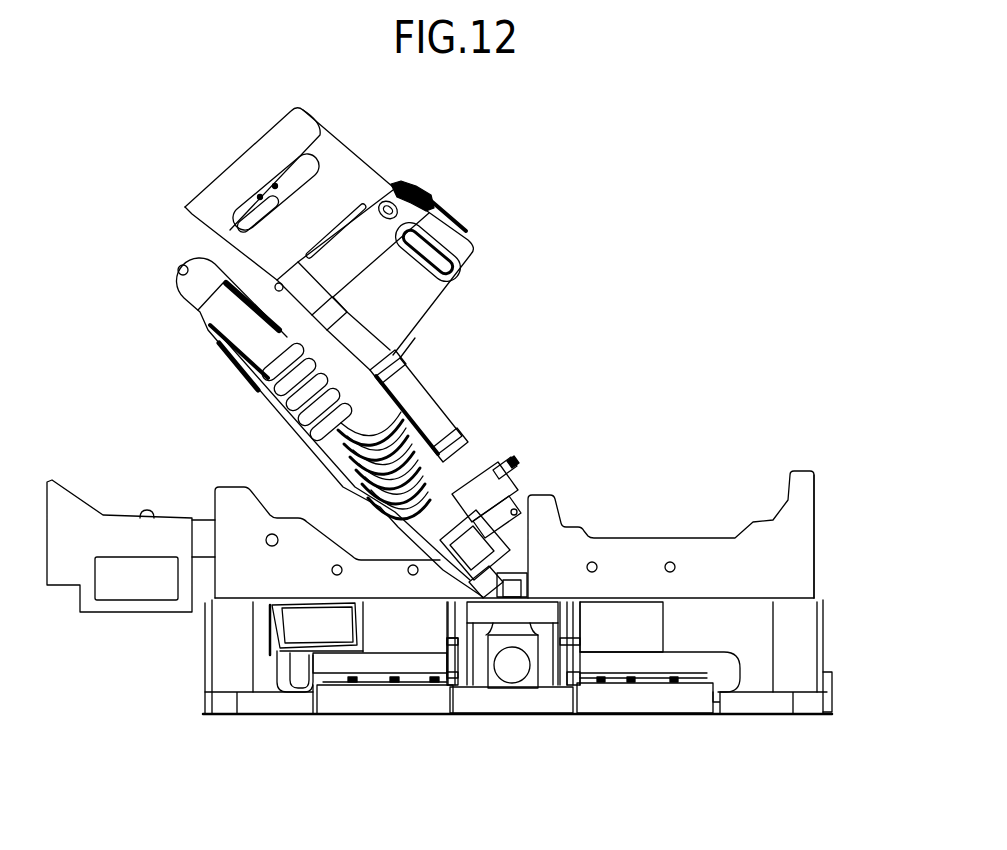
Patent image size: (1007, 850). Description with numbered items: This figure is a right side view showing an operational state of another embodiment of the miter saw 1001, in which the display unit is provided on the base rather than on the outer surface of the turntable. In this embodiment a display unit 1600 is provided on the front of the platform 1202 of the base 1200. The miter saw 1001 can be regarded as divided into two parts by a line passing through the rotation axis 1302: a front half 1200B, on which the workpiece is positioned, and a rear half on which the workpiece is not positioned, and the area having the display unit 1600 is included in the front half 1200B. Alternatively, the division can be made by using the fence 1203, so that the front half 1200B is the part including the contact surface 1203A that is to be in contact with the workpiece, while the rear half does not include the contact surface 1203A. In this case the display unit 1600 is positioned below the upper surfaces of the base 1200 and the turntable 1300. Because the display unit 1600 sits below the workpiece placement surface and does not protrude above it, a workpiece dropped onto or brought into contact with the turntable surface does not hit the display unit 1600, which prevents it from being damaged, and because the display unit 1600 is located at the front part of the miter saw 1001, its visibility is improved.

The miter saw 1001 is at (676, 158).
The base 1200 is at (203, 653).
The front half 1200B is at (797, 598).
The platform 1202 is at (252, 695).
The fence 1203 is at (802, 470).
The contact surface 1203A is at (787, 548).
The turntable 1300 is at (620, 627).
The rotation axis 1302 is at (527, 572).
The display unit 1600 is at (277, 660).